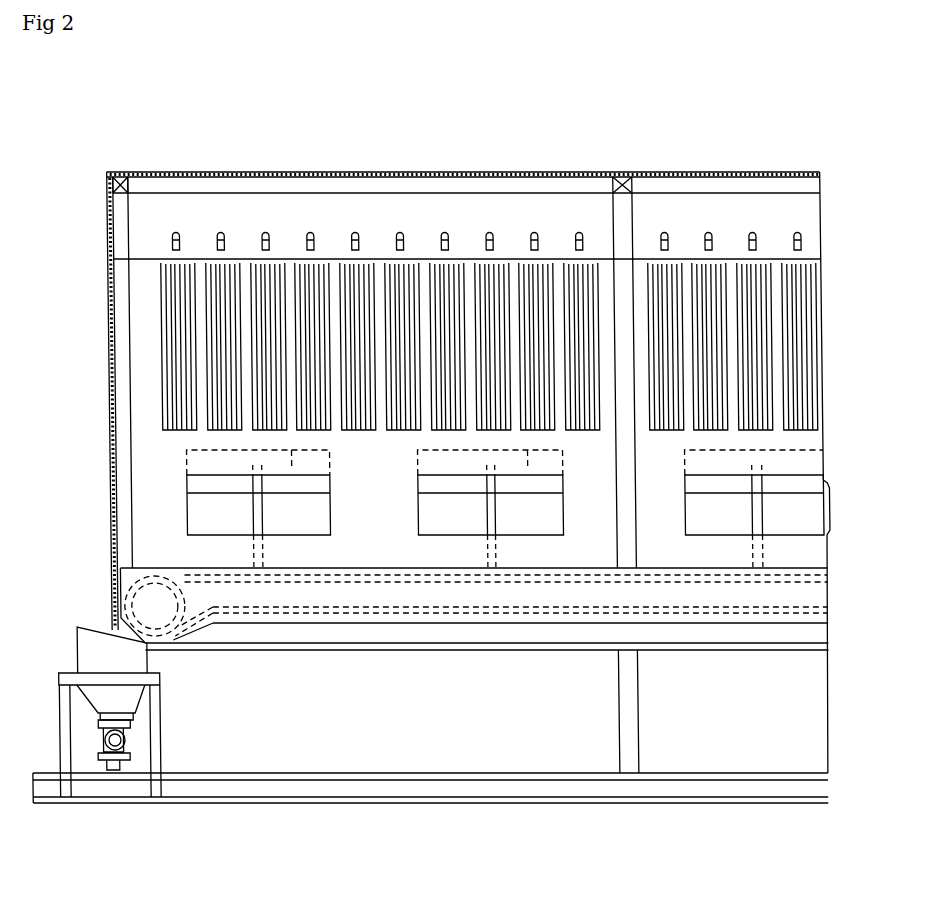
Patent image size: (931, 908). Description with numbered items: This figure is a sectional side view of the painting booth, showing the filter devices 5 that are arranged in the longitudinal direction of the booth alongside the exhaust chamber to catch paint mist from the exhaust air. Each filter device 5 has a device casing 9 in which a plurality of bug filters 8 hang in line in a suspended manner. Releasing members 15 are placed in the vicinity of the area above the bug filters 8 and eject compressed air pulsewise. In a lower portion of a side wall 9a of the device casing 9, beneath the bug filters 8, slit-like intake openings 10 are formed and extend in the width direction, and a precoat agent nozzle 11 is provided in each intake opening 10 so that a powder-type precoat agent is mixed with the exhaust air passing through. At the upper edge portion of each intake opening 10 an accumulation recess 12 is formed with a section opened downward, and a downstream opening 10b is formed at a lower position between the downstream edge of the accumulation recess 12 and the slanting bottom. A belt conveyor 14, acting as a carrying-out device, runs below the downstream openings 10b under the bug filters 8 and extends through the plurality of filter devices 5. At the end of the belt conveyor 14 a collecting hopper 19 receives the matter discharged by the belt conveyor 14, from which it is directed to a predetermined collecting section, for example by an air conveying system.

The filter device 5 is at (150, 125).
The bug filter 8 is at (253, 378).
The device casing 9 is at (107, 290).
The side wall 9a is at (145, 430).
The intake opening 10 is at (434, 604).
The downstream opening 10b is at (198, 502).
The precoat agent nozzle 11 is at (257, 510).
The accumulation recess 12 is at (294, 462).
The belt conveyor 14 is at (387, 597).
The releasing member 15 is at (308, 232).
The collecting hopper 19 is at (135, 661).